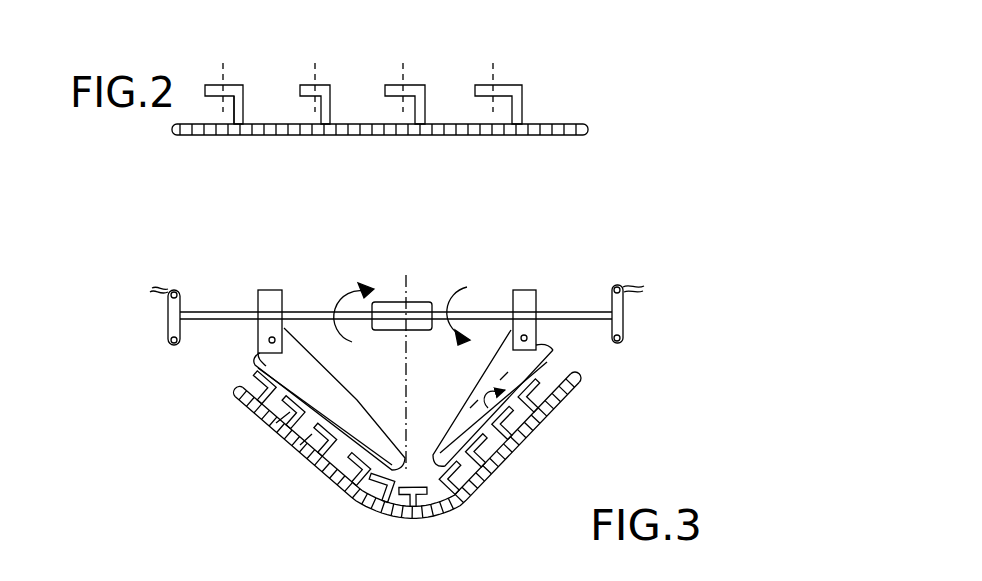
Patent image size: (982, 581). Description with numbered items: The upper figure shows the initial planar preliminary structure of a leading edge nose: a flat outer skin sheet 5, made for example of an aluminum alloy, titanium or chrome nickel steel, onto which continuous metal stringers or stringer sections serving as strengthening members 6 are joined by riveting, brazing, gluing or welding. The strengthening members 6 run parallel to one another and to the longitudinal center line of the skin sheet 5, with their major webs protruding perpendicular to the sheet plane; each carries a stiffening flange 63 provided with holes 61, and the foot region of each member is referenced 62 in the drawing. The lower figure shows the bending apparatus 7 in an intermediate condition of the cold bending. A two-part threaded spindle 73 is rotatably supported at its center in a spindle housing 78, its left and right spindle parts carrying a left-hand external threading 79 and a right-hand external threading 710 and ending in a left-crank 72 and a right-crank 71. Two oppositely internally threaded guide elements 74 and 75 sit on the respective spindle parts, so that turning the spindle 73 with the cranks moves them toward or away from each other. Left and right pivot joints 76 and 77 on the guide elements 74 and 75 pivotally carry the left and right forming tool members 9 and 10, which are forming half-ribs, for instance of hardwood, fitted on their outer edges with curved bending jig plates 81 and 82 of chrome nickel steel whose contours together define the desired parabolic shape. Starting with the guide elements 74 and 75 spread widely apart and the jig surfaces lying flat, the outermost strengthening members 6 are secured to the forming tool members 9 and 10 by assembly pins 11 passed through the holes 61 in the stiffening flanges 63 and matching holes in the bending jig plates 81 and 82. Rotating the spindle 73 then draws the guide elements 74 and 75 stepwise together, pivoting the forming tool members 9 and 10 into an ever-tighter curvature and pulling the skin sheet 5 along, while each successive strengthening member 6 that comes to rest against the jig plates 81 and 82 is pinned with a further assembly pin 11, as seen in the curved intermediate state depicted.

In FIG. 2, the outer skin sheet 5 is at (540, 124).
In FIG. 3, the outer skin sheet 5 is at (383, 518).
In FIG. 2, the strengthening members 6 is at (418, 104).
In FIG. 3, the strengthening members 6 is at (348, 487).
In FIG. 2, the holes 61 is at (318, 80).
In FIG. 2, the hook base 62 is at (249, 115).
In FIG. 2, the stiffening flanges 63 is at (216, 84).
In FIG. 3, the bending apparatus 7 is at (660, 246).
In FIG. 3, the right-crank 71 is at (624, 318).
In FIG. 3, the left-crank 72 is at (166, 316).
In FIG. 3, the threaded spindle 73 is at (334, 310).
In FIG. 3, the guide element 74 is at (258, 305).
In FIG. 3, the guide element 75 is at (538, 320).
In FIG. 3, the left pivot joint 76 is at (258, 348).
In FIG. 3, the right pivot joint 77 is at (550, 343).
In FIG. 3, the spindle housing 78 is at (388, 302).
In FIG. 3, the left-hand external threading 79 is at (319, 302).
In FIG. 3, the right-hand external threading 710 is at (562, 302).
In FIG. 3, the left forming tool member 9 is at (275, 400).
In FIG. 3, the right forming tool member 10 is at (485, 458).
In FIG. 3, the assembly pins 11 is at (517, 453).
In FIG. 3, the bending jig plate 81 is at (296, 445).
In FIG. 3, the bending jig plate 82 is at (443, 512).